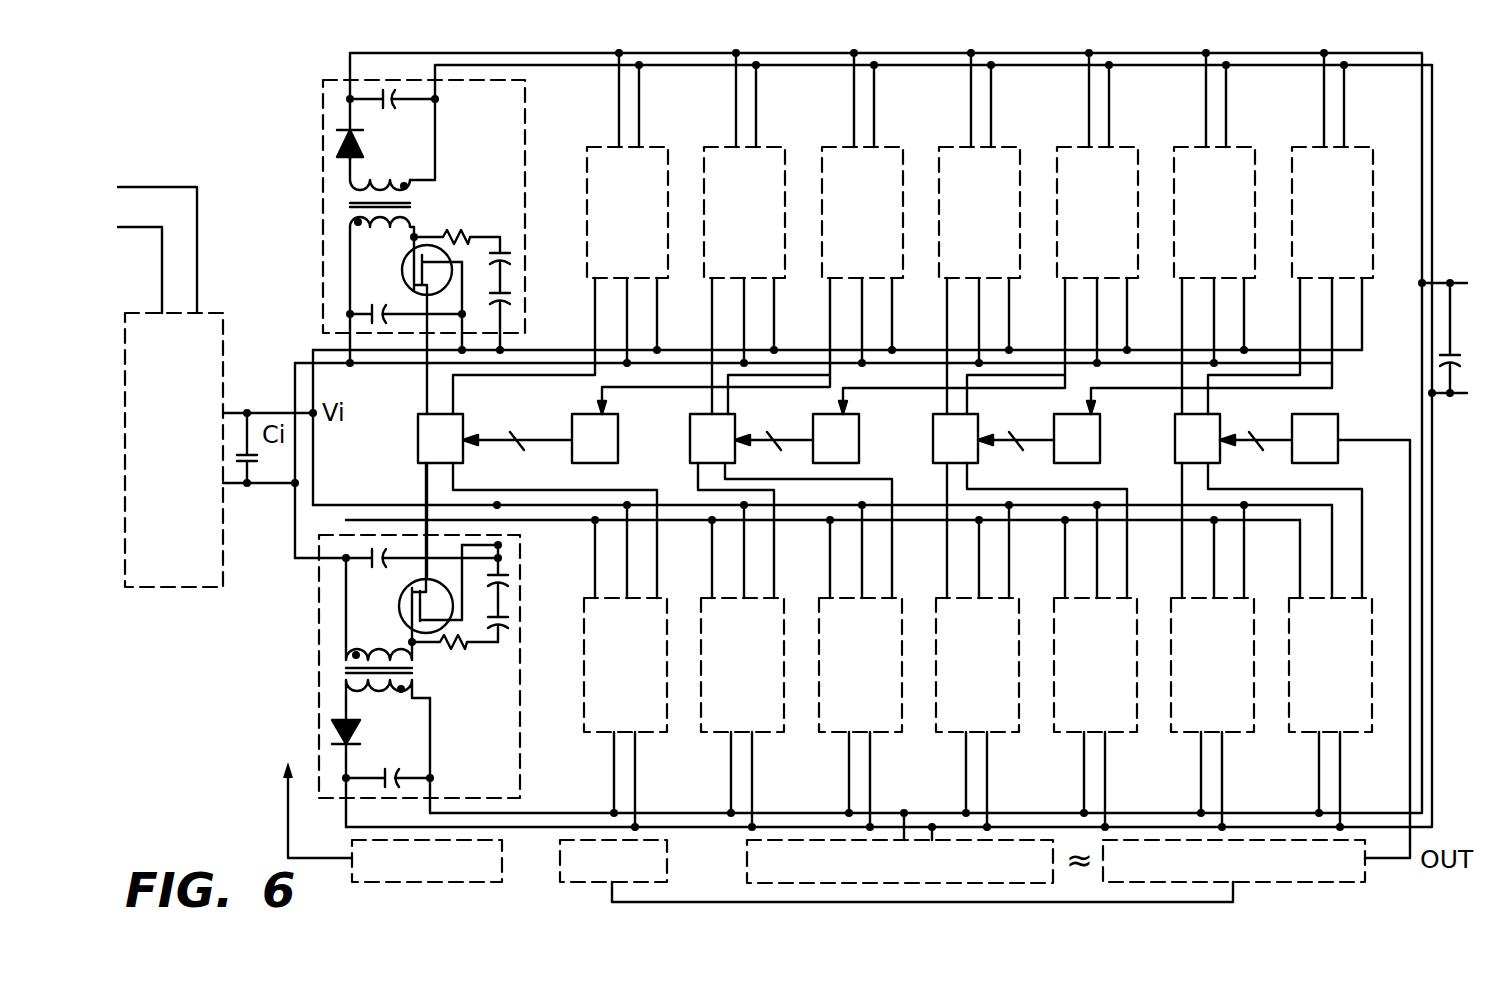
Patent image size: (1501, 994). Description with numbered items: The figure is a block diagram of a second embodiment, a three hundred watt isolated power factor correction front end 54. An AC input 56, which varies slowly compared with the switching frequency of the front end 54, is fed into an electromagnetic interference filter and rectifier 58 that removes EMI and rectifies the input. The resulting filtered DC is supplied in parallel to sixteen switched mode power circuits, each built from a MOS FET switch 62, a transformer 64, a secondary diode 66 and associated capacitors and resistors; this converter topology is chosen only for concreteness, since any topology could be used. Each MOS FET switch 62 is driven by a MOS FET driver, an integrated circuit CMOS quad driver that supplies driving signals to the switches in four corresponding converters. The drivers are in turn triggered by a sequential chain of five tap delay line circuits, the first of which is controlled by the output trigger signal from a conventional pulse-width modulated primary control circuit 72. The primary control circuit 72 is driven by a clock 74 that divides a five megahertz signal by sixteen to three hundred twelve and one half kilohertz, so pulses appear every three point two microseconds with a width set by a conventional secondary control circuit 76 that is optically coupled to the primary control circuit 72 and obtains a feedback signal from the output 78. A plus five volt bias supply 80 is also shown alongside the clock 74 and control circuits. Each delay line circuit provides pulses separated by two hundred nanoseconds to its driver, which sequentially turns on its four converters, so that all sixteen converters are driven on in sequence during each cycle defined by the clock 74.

The isolated power factor correction front end 54 is at (268, 669).
The AC input 56 is at (141, 203).
The electromagnetic interference filter and rectifier 58 is at (153, 590).
The MOS FET switch 62 is at (400, 281).
The transformer 64 is at (410, 205).
The secondary diode 66 is at (363, 146).
The primary control circuit 72 is at (1290, 883).
The clock 74 is at (570, 884).
The secondary control circuit 76 is at (747, 870).
The output 78 is at (1443, 283).
The +5V bias supply 80 is at (412, 884).